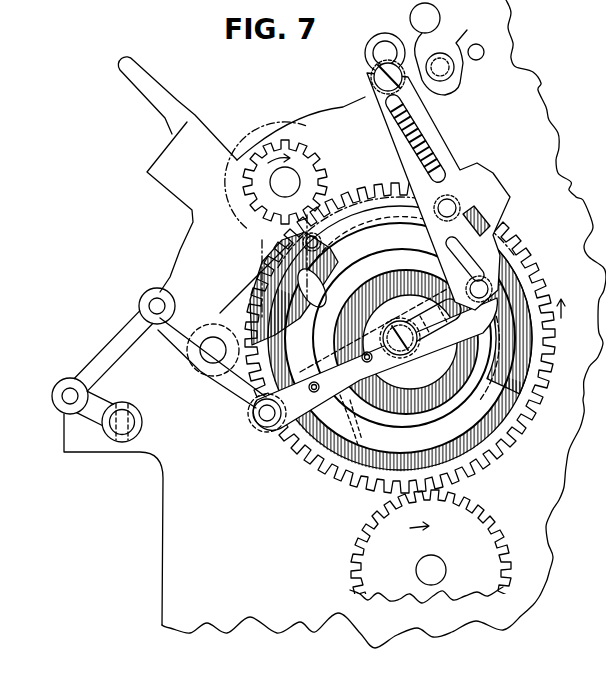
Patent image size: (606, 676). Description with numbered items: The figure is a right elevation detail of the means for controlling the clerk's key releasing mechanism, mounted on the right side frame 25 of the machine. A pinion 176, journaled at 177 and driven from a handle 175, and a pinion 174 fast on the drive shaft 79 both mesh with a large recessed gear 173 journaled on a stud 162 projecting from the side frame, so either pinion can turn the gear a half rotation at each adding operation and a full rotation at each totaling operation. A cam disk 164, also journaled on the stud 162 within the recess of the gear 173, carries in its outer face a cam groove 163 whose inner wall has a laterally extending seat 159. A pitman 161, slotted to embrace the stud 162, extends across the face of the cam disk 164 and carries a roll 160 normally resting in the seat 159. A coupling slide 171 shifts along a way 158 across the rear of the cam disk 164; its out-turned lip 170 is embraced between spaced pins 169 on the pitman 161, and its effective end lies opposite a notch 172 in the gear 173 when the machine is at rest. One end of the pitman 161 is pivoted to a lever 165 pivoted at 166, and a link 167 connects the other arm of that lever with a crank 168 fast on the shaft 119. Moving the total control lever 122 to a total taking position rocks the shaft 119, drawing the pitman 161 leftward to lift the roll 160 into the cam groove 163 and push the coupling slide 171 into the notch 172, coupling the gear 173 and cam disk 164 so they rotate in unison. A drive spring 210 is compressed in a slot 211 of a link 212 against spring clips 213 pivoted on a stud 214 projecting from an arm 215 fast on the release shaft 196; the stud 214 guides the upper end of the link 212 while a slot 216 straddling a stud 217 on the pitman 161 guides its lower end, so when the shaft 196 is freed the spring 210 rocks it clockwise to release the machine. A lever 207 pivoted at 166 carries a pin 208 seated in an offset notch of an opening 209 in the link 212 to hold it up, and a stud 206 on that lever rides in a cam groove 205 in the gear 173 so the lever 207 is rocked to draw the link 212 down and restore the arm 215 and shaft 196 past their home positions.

The right side frame 25 is at (540, 88).
The drive shaft 79 is at (440, 570).
The shaft 119 is at (134, 416).
The total control lever 122 is at (146, 86).
The way 158 is at (372, 420).
The seat 159 is at (347, 420).
The roll 160 is at (388, 378).
The pitman 161 is at (413, 290).
The stud 162 is at (415, 350).
The cam groove 163 is at (382, 278).
The cam disk 164 is at (479, 356).
The lever 165 is at (208, 370).
The pivot 166 is at (214, 338).
The link 167 is at (118, 340).
The crank 168 is at (110, 398).
The spaced pins 169 is at (362, 354).
The out-turned lip 170 is at (316, 394).
The coupling slide 171 is at (400, 456).
The notch 172 is at (279, 280).
The large recessed gear 173 is at (530, 395).
The pinion 174 is at (486, 518).
The handle 175 is at (248, 226).
The pinion 176 is at (300, 150).
The journal 177 is at (283, 183).
The release shaft 196 is at (455, 68).
The cam groove 205 is at (542, 338).
The stud 206 is at (322, 240).
The lever 207 is at (393, 182).
The pin 208 is at (440, 214).
The opening 209 is at (483, 198).
The drive spring 210 is at (420, 133).
The slot 211 is at (430, 155).
The link 212 is at (478, 172).
The spring clips 213 is at (373, 83).
The stud 214 is at (372, 68).
The arm 215 is at (437, 92).
The slot 216 is at (452, 250).
The stud 217 is at (481, 300).